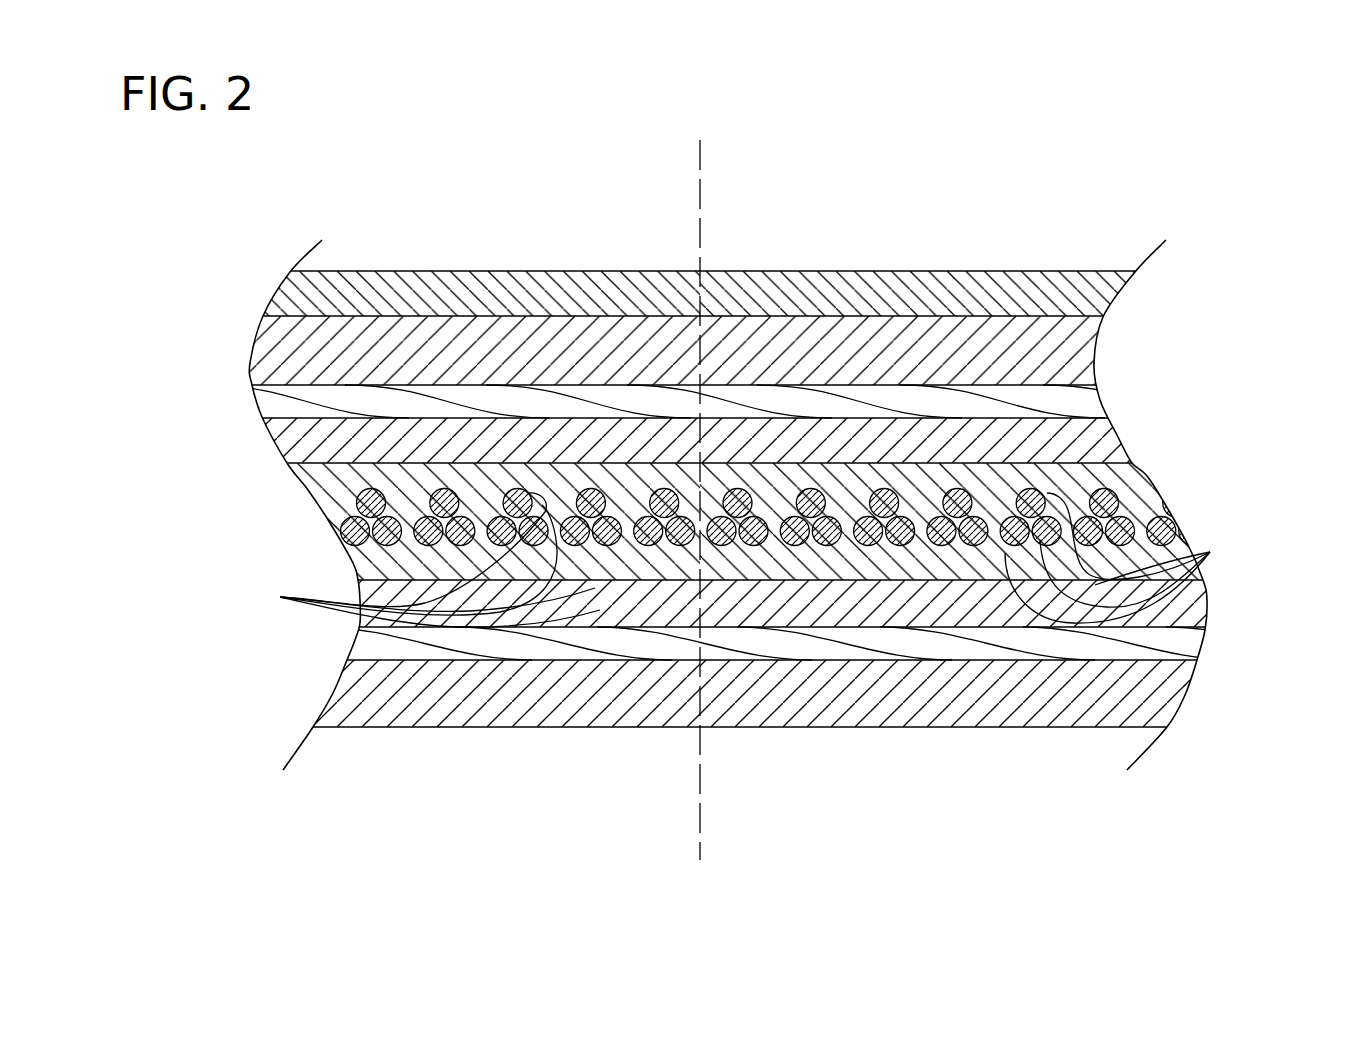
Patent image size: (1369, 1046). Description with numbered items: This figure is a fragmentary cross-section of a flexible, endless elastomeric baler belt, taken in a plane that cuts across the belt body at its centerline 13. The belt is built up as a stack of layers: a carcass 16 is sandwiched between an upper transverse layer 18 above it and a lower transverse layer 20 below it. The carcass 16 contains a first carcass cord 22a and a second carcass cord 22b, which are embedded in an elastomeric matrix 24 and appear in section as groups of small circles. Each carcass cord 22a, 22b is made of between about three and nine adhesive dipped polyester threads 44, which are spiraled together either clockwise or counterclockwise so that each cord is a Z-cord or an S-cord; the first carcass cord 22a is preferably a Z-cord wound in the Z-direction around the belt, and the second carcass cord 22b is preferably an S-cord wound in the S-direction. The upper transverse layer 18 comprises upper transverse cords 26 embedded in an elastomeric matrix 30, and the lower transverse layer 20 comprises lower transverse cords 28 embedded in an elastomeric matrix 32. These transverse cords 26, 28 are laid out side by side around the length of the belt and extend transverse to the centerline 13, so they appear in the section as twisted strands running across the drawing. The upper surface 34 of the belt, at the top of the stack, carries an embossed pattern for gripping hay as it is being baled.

The centerline 13 is at (705, 832).
The carcass 16 is at (744, 659).
The upper transverse layer 18 is at (700, 383).
The lower transverse layer 20 is at (784, 712).
The first carcass cord 22a is at (760, 553).
The second carcass cord 22b is at (640, 553).
The elastomeric matrix 24 is at (1138, 505).
The upper transverse cords 26 is at (272, 405).
The lower transverse cords 28 is at (377, 647).
The elastomeric matrix 30 is at (280, 352).
The elastomeric matrix 32 is at (1180, 615).
The upper surface 34 is at (997, 271).
The adhesive dipped polyester threads 44 is at (280, 597).